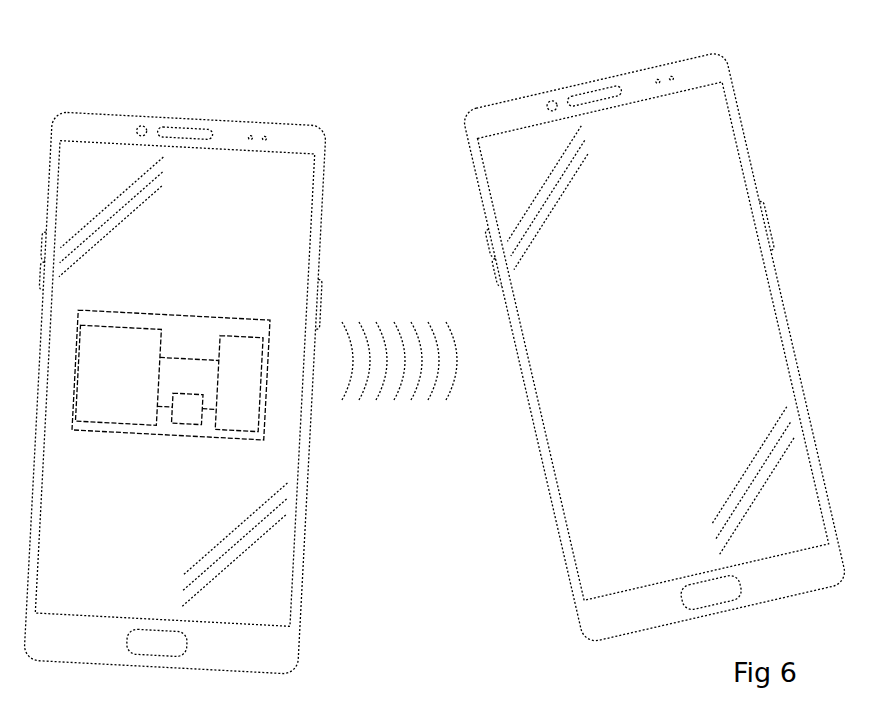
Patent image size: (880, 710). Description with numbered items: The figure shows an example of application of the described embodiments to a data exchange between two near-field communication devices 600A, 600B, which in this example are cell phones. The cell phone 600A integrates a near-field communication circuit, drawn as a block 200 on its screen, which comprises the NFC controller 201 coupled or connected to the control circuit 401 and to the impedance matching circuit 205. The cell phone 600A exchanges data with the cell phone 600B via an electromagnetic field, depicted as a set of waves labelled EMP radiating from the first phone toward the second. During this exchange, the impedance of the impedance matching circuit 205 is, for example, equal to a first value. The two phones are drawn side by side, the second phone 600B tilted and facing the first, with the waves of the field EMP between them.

The near-field communication device 600A is at (165, 116).
The near-field communication device 600B is at (575, 82).
The electromagnetic pulse generator module 200 is at (157, 312).
The NFC controller 201 is at (103, 424).
The control circuit 401 is at (180, 428).
The impedance matching circuit 205 is at (243, 434).
The electromagnetic pulse EMP is at (400, 410).